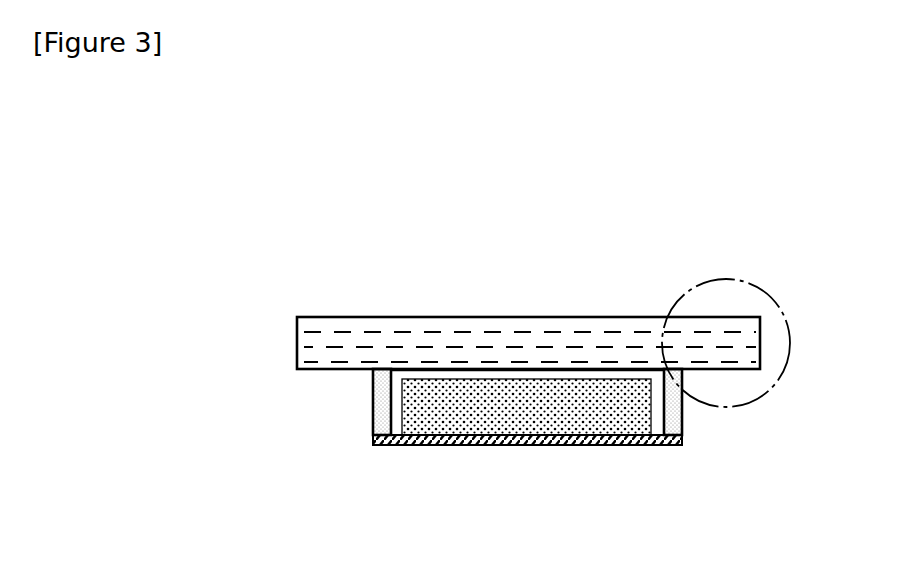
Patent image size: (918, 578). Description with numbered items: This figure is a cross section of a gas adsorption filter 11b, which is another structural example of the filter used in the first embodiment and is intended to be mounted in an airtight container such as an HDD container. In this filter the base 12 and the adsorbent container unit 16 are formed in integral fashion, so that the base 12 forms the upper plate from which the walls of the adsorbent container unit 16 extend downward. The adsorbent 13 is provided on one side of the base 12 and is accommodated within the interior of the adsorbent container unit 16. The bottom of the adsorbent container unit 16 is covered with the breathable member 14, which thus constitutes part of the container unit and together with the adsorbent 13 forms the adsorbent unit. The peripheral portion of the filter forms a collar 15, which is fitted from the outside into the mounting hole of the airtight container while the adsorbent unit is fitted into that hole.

The gas adsorption filter 11b is at (509, 303).
The base 12 is at (452, 316).
The adsorbent 13 is at (578, 412).
The breathable member 14 is at (505, 447).
The collar 15 is at (772, 392).
The adsorbent container unit 16 is at (367, 406).